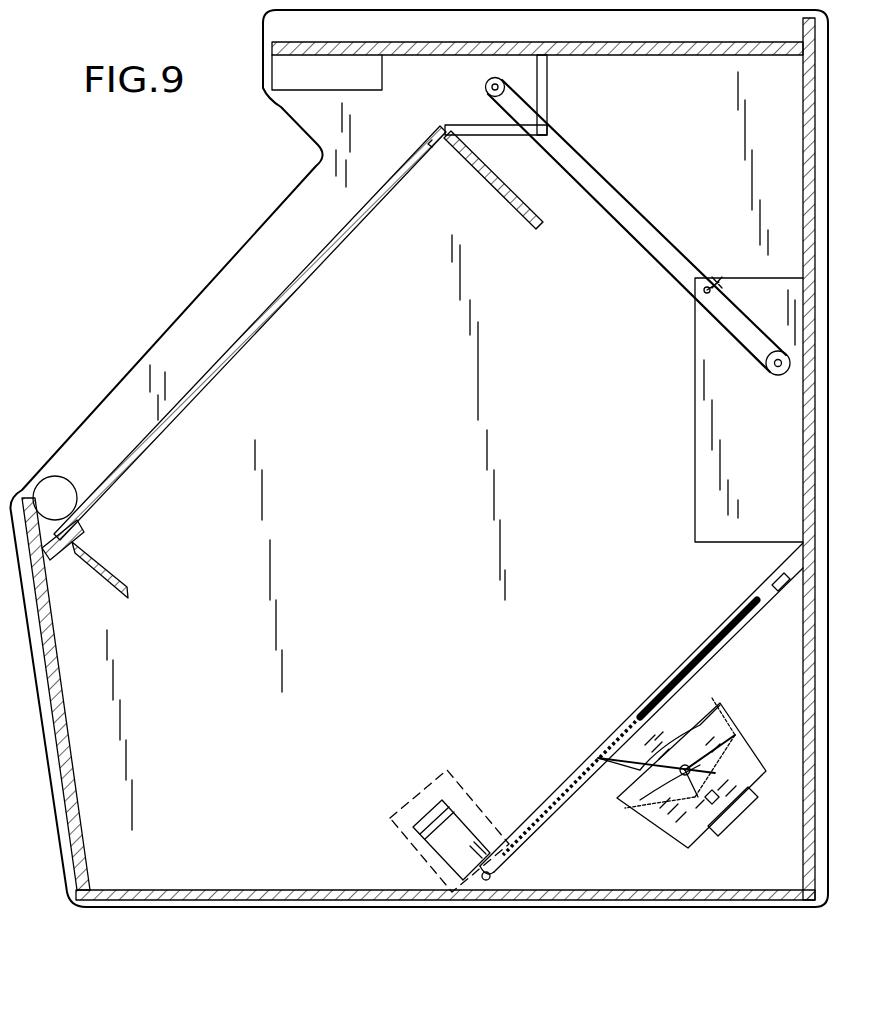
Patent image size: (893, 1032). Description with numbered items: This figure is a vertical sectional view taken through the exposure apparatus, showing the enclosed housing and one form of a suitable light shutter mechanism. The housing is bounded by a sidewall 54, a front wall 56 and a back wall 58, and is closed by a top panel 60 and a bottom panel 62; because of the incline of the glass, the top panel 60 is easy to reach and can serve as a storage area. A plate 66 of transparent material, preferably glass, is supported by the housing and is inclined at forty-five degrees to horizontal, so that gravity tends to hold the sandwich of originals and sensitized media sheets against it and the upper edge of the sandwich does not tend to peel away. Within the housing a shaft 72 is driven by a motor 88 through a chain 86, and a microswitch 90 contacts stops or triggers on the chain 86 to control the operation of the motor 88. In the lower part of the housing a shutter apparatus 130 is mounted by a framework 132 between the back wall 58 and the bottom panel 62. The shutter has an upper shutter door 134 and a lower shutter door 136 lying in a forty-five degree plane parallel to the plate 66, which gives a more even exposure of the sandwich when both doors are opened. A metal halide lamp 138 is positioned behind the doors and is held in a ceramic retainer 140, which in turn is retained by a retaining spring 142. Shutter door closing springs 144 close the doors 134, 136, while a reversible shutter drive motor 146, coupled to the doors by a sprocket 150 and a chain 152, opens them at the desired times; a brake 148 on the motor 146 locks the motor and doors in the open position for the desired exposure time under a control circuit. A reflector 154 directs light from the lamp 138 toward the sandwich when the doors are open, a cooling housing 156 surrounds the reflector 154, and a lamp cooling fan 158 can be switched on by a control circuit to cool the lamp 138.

The sidewall 54 is at (564, 444).
The front wall 56 is at (72, 775).
The back wall 58 is at (803, 630).
The top panel 60 is at (641, 57).
The bottom panel 62 is at (712, 890).
The plate 66 is at (283, 298).
The shaft 72 is at (485, 88).
The chain 86 is at (625, 197).
The motor 88 is at (778, 376).
The microswitch 90 is at (719, 282).
The shutter apparatus 130 is at (638, 842).
The framework 132 is at (727, 646).
The upper shutter door 134 is at (670, 677).
The lower shutter door 136 is at (607, 728).
The metal halide lamp 138 is at (685, 765).
The ceramic retainer 140 is at (598, 758).
The retaining spring 142 is at (632, 815).
The shutter door closing spring 144 is at (663, 707).
The reversible shutter drive motor 146 is at (480, 827).
The brake 148 is at (462, 800).
The sprocket 150 is at (490, 878).
The chain 152 is at (523, 848).
The reflector 154 is at (735, 742).
The cooling housing 156 is at (735, 716).
The lamp cooling fan 158 is at (735, 825).